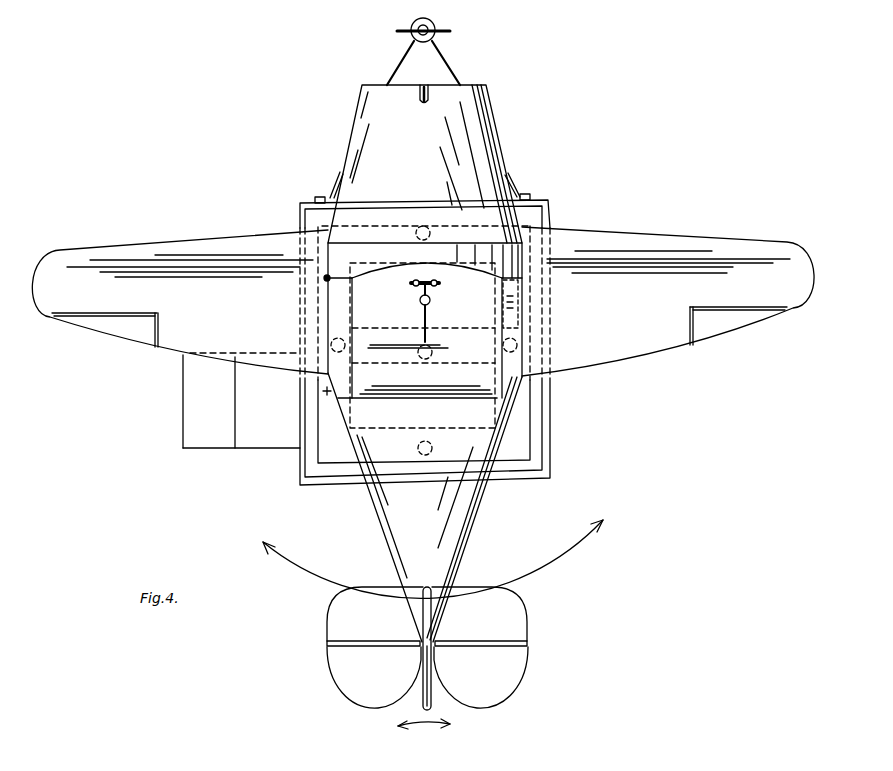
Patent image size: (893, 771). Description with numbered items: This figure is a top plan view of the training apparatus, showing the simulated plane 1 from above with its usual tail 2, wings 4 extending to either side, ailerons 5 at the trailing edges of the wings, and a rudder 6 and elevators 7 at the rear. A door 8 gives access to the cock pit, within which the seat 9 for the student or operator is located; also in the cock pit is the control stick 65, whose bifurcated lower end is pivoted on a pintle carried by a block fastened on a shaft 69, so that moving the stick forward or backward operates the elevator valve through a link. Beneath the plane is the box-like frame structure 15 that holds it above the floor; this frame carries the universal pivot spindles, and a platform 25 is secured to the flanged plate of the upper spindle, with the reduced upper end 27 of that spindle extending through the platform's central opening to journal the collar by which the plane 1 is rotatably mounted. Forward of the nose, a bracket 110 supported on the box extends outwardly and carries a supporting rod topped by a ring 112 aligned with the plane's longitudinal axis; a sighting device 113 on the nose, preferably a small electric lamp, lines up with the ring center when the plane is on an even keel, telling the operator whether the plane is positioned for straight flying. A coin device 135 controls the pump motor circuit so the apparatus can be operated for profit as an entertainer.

The plane 1 is at (487, 151).
The tail 2 is at (450, 511).
The wings 4 is at (230, 272).
The ailerons 5 is at (128, 333).
The rudder 6 is at (420, 700).
The elevators 7 is at (350, 688).
The door 8 is at (337, 292).
The seat 9 is at (473, 370).
The box-like frame structure 15 is at (303, 473).
The platform 25 is at (343, 453).
The reduced upper end of the spindle 27 is at (432, 348).
The control stick 65 is at (419, 300).
The shaft 69 is at (421, 322).
The bracket 110 is at (396, 60).
The ring 112 is at (410, 30).
The sighting device 113 is at (430, 92).
The coin device 135 is at (524, 295).